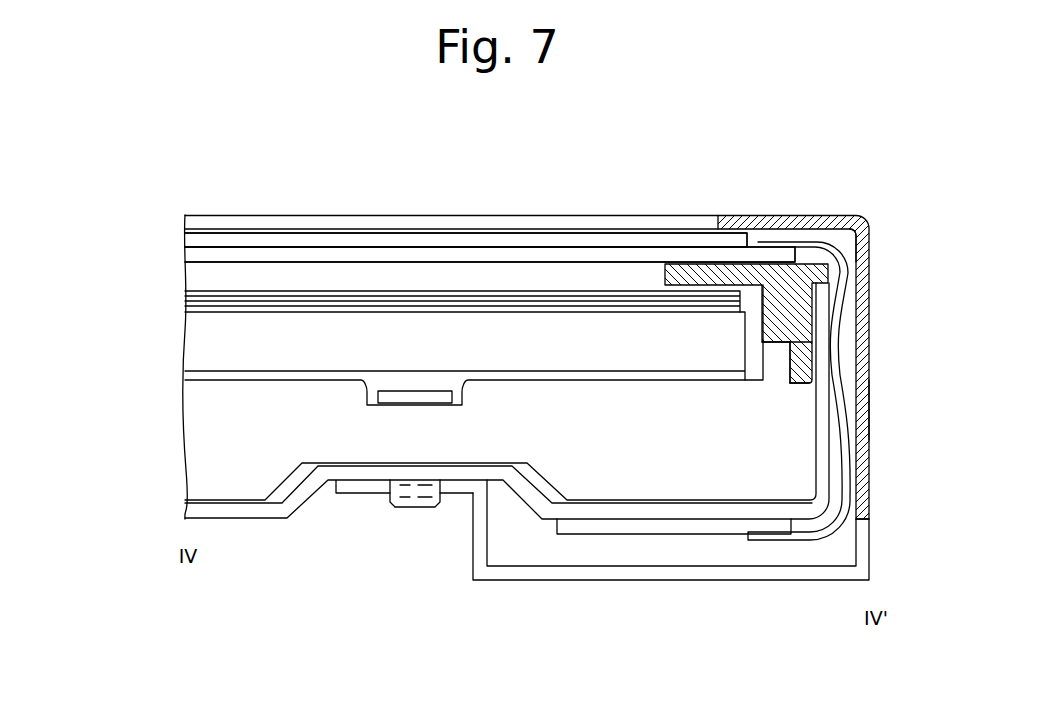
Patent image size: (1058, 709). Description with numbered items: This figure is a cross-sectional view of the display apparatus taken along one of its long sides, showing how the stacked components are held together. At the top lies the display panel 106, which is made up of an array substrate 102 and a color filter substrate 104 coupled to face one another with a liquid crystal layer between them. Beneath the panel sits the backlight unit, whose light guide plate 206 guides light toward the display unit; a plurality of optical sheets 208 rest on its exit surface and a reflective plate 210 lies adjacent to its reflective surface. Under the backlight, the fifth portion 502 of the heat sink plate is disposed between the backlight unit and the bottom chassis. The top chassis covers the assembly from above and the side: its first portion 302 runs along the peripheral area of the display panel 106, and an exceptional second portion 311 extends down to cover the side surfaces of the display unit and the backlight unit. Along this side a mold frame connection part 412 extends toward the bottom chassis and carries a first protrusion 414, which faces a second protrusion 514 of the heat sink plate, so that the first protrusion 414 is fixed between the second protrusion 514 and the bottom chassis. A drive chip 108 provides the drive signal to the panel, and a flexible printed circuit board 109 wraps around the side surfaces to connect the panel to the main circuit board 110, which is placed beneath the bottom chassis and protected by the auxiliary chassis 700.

The display panel 106 is at (100, 223).
The array substrate 102 is at (190, 241).
The color filter substrate 104 is at (190, 258).
The optical sheets 208 is at (178, 289).
The light guide plate 206 is at (190, 343).
The reflective plate 210 is at (190, 379).
The fifth portion 502 is at (190, 443).
The first portion 302 is at (797, 215).
The flexible printed circuit board 109 is at (840, 252).
The mold frame connection part 412 is at (808, 300).
The second protrusion 514 is at (782, 355).
The first protrusion 414 is at (807, 367).
The exceptional second portions 311 is at (866, 406).
The drive chip 108 is at (850, 463).
The main circuit board 110 is at (668, 528).
The auxiliary chassis 700 is at (790, 576).